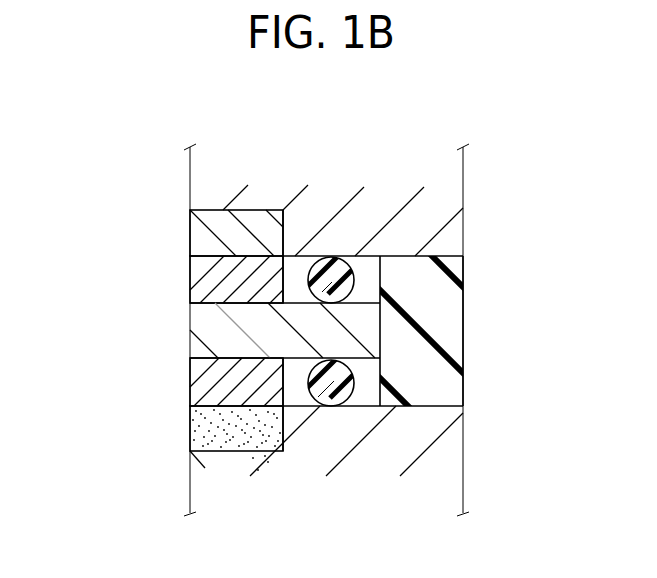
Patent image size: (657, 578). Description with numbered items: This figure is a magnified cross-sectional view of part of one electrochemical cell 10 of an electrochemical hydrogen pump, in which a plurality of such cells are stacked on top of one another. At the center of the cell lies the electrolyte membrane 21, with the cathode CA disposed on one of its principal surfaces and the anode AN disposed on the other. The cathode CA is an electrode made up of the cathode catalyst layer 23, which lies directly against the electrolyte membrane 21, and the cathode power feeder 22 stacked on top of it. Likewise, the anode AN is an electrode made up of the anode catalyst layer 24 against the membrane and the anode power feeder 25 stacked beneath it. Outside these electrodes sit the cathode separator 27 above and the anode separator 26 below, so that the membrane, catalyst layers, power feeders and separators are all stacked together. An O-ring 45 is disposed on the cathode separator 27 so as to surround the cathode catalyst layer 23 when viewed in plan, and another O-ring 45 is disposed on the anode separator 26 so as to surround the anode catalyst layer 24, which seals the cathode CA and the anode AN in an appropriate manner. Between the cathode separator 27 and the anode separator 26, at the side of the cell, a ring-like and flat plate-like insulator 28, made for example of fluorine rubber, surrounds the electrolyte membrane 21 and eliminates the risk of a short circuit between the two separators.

The electrochemical cell 10 is at (558, 200).
The electrolyte membrane 21 is at (208, 327).
The cathode power feeder 22 is at (198, 237).
The cathode catalyst layer 23 is at (197, 277).
The anode catalyst layer 24 is at (205, 382).
The anode power feeder 25 is at (200, 427).
The anode separator 26 is at (418, 445).
The cathode separator 27 is at (425, 222).
The insulator 28 is at (440, 335).
The O-ring 45 is at (338, 277).
The cathode CA is at (70, 187).
The anode AN is at (70, 405).